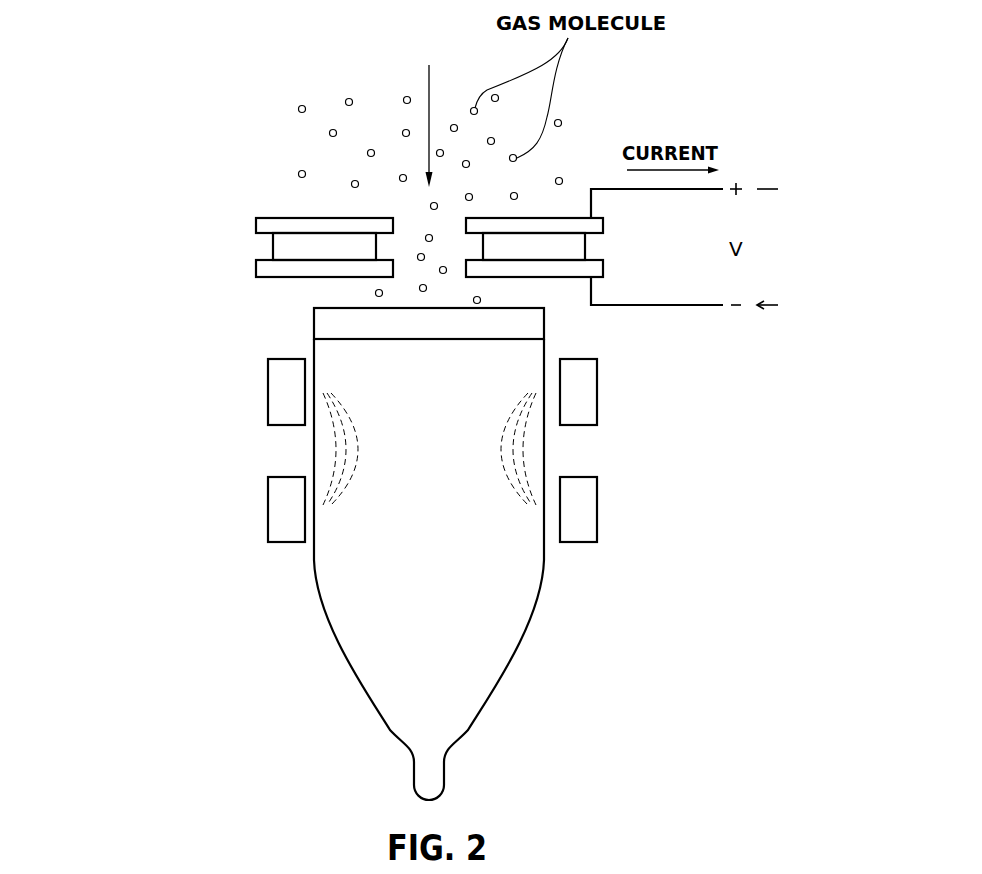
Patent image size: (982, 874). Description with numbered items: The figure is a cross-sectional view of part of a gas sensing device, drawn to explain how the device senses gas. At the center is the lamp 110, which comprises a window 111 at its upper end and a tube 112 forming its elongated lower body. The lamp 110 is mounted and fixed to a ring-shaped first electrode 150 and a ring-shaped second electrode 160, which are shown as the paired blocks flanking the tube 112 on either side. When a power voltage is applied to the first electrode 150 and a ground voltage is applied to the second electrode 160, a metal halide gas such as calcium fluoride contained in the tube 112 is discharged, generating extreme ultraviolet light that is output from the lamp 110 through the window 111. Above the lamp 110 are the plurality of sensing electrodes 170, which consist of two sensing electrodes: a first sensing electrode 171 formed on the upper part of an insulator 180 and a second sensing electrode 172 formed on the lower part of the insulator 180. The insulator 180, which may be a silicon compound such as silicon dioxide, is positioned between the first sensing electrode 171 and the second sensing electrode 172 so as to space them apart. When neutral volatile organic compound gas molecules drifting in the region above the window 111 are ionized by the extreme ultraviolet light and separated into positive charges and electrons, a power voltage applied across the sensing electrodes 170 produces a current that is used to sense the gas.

The lamp 110 is at (436, 516).
The window 111 is at (313, 327).
The tube 112 is at (520, 595).
The first electrode 150 is at (268, 372).
The second electrode 160 is at (268, 490).
The plurality of sensing electrodes 170 is at (325, 194).
The first sensing electrode 171 is at (295, 227).
The second sensing electrode 172 is at (273, 267).
The insulator 180 is at (295, 247).